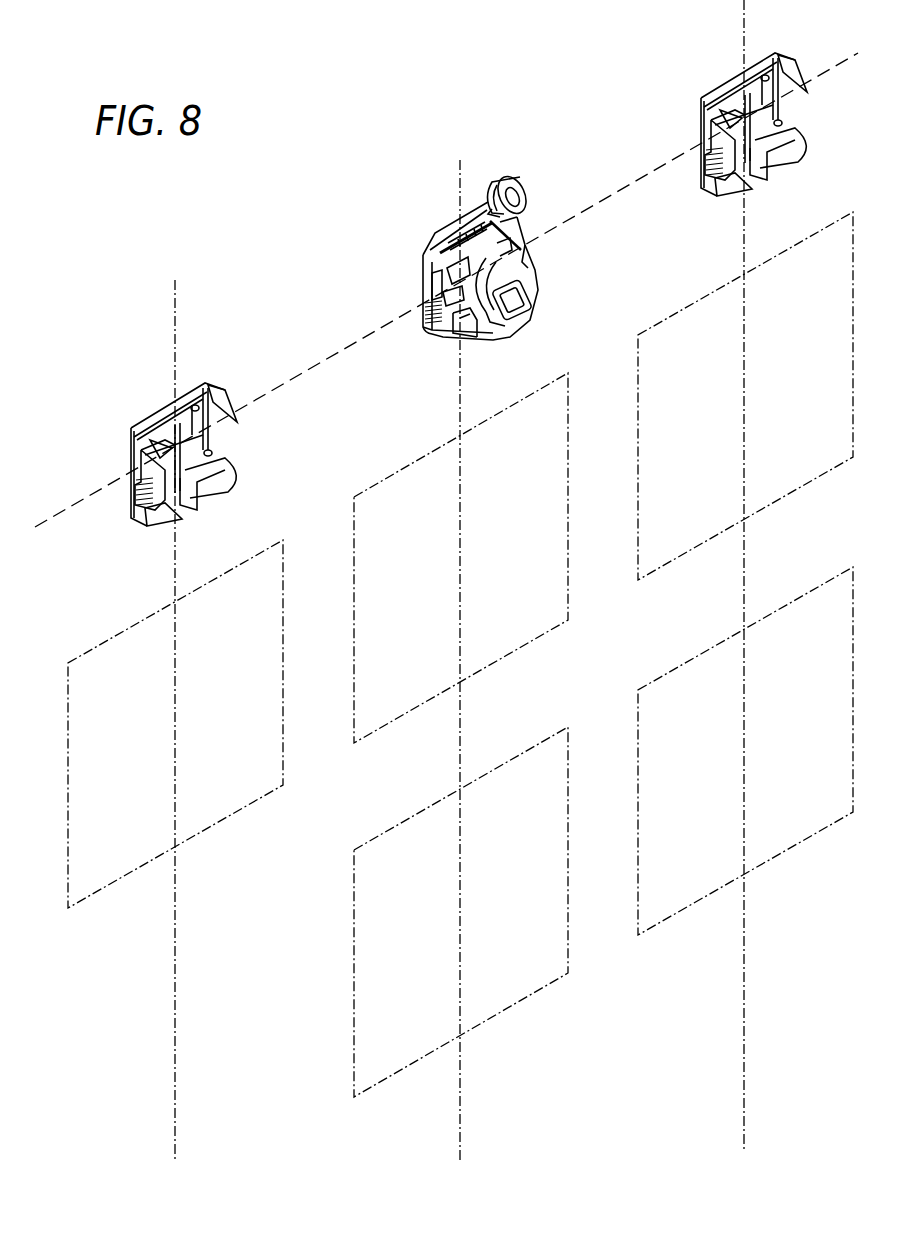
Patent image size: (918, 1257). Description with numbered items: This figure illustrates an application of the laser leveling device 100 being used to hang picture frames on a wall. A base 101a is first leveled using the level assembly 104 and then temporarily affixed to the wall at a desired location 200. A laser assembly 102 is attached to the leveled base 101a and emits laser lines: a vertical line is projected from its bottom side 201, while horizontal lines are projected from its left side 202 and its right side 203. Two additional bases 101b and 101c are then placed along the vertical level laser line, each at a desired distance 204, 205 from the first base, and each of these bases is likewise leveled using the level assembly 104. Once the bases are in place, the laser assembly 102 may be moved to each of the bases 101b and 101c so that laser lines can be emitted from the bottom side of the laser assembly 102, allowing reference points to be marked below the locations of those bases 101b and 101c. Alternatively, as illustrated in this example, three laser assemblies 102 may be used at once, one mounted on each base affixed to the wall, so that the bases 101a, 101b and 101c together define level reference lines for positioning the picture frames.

The laser leveling device 100 is at (387, 188).
The base 101a is at (422, 283).
The additional base 101b is at (218, 390).
The additional base 101c is at (718, 84).
The laser assembly 102 is at (513, 247).
The level assembly 104 is at (515, 178).
The desired location 200 is at (442, 253).
The bottom side 201 is at (487, 333).
The left side 202 is at (450, 293).
The right side 203 is at (536, 283).
The desired distance 204 is at (160, 443).
The desired distance 205 is at (755, 87).